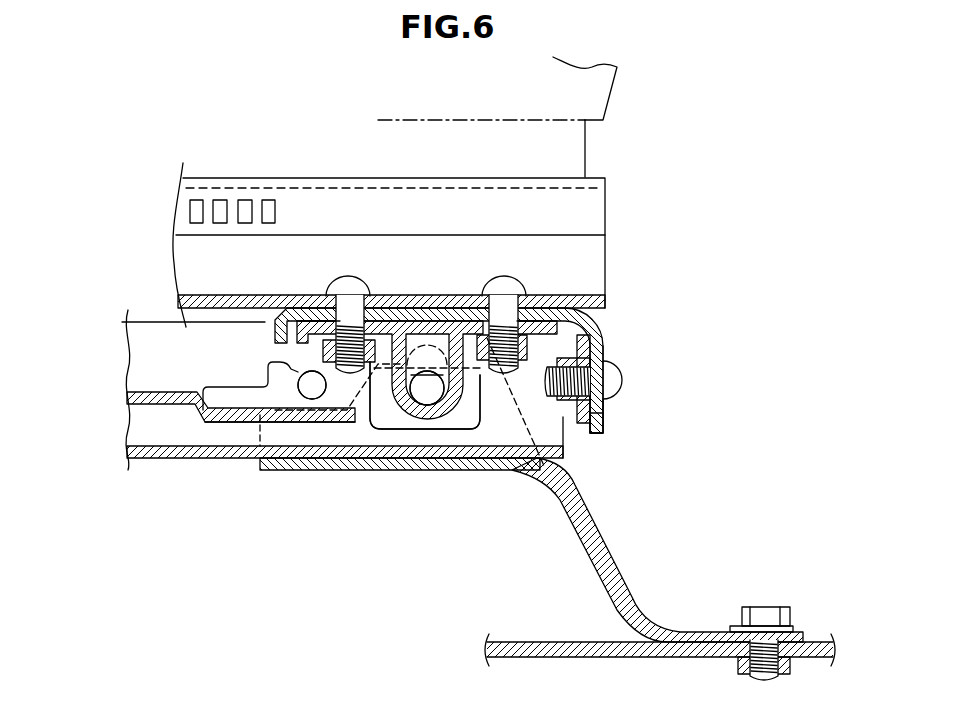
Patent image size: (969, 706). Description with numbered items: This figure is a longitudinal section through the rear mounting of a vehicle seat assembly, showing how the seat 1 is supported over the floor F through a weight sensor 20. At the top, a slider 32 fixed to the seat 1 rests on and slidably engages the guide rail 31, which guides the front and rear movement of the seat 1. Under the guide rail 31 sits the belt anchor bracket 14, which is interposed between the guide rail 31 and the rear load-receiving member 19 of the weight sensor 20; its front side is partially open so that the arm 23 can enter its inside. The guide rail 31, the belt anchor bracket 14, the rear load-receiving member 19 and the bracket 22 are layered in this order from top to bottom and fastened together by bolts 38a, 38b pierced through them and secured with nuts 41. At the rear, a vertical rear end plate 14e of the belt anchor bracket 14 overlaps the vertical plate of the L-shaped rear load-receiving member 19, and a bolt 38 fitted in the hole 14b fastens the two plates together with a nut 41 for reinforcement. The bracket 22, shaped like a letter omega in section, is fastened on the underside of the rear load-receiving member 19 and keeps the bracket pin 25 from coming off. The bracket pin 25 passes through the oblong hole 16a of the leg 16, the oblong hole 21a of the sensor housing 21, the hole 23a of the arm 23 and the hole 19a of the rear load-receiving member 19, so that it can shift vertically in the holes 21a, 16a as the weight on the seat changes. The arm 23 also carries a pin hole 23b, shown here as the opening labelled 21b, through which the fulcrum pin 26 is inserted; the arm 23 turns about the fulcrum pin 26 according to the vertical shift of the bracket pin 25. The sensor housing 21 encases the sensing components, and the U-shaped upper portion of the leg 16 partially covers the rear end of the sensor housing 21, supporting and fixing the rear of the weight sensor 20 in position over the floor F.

The seat 1 is at (602, 97).
The slider 32 is at (582, 150).
The guide rail 31 is at (613, 270).
The belt anchor bracket 14 is at (603, 326).
The hole 14b is at (612, 372).
The rear end plate 14e is at (607, 406).
The rear load-receiving member 19 is at (610, 332).
The hole 19a is at (437, 370).
The hole 23a is at (427, 388).
The vertically oblong hole 21a is at (405, 340).
The vertically oblong hole 16a is at (425, 395).
The pin 21b is at (300, 372).
The pin hole 23b is at (312, 385).
The bolt 38 is at (617, 391).
The bolt 38a is at (505, 288).
The bolt 38b is at (350, 288).
The nut 41 is at (317, 305).
The weight sensor 20 is at (617, 445).
The sensor housing 21 is at (228, 460).
The arm 23 is at (183, 407).
The fulcrum pin 26 is at (312, 423).
The bracket pin 25 is at (398, 470).
The bracket 22 is at (474, 470).
The leg 16 is at (600, 566).
The floor F is at (543, 641).